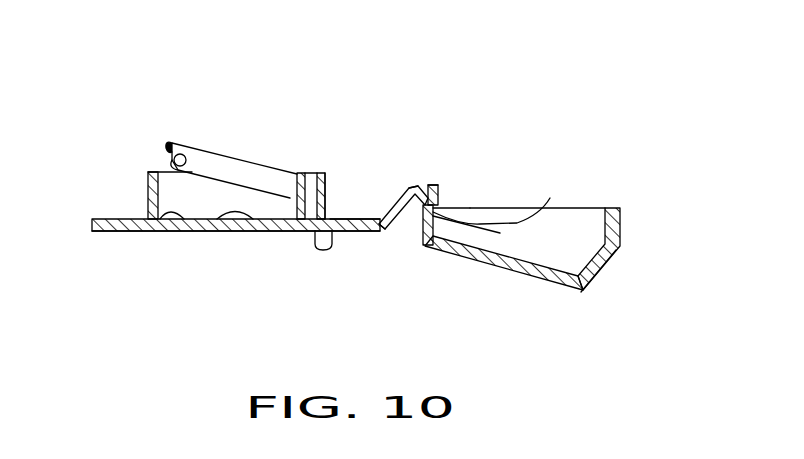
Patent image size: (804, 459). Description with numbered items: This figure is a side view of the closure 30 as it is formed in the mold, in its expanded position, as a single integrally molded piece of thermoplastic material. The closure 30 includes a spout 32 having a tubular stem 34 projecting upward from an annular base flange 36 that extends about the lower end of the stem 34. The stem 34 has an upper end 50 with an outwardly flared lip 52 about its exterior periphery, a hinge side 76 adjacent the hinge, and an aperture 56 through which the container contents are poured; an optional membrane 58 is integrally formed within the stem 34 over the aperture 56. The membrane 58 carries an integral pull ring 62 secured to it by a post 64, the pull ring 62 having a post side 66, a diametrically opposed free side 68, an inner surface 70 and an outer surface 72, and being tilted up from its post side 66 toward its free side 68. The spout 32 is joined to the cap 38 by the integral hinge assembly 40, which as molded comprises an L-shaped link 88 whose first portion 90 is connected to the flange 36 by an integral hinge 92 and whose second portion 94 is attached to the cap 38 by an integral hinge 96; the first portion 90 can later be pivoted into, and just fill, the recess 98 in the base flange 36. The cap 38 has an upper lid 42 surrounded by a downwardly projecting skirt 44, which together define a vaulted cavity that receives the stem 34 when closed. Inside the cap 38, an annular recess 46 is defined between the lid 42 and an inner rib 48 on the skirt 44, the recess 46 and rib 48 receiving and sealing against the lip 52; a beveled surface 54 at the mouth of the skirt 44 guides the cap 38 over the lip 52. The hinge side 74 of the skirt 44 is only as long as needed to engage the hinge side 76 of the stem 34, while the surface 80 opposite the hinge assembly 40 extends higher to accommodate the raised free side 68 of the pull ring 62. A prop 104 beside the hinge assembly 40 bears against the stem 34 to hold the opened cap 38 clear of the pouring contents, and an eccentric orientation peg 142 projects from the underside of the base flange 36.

The closure 30 is at (448, 95).
The spout 32 is at (233, 95).
The stem 34 is at (147, 197).
The base flange 36 is at (365, 232).
The cap 38 is at (573, 115).
The hinge assembly 40 is at (395, 110).
The upper lid 42 is at (495, 268).
The skirt 44 is at (622, 229).
The annular recess 46 is at (506, 195).
The inner rib 48 is at (510, 226).
The upper end 50 is at (148, 191).
The lip 52 is at (148, 175).
The beveled surface 54 is at (604, 210).
The aperture 56 is at (178, 221).
The membrane 58 is at (268, 232).
The pull ring 62 is at (221, 148).
The post 64 is at (300, 172).
The post side 66 is at (320, 172).
The free side 68 is at (176, 146).
The inner surface 70 is at (172, 160).
The outer surface 72 is at (174, 147).
The hinge side of the skirt 74 is at (428, 246).
The hinge side of the stem 76 is at (330, 178).
The surface 80 is at (603, 272).
The L-shaped link 88 is at (401, 194).
The first portion 90 is at (398, 229).
The integral hinge 92 is at (386, 218).
The second portion 94 is at (422, 190).
The integral hinge 96 is at (446, 206).
The recess 98 is at (342, 217).
The prop 104 is at (440, 186).
The orientation peg 142 is at (323, 252).